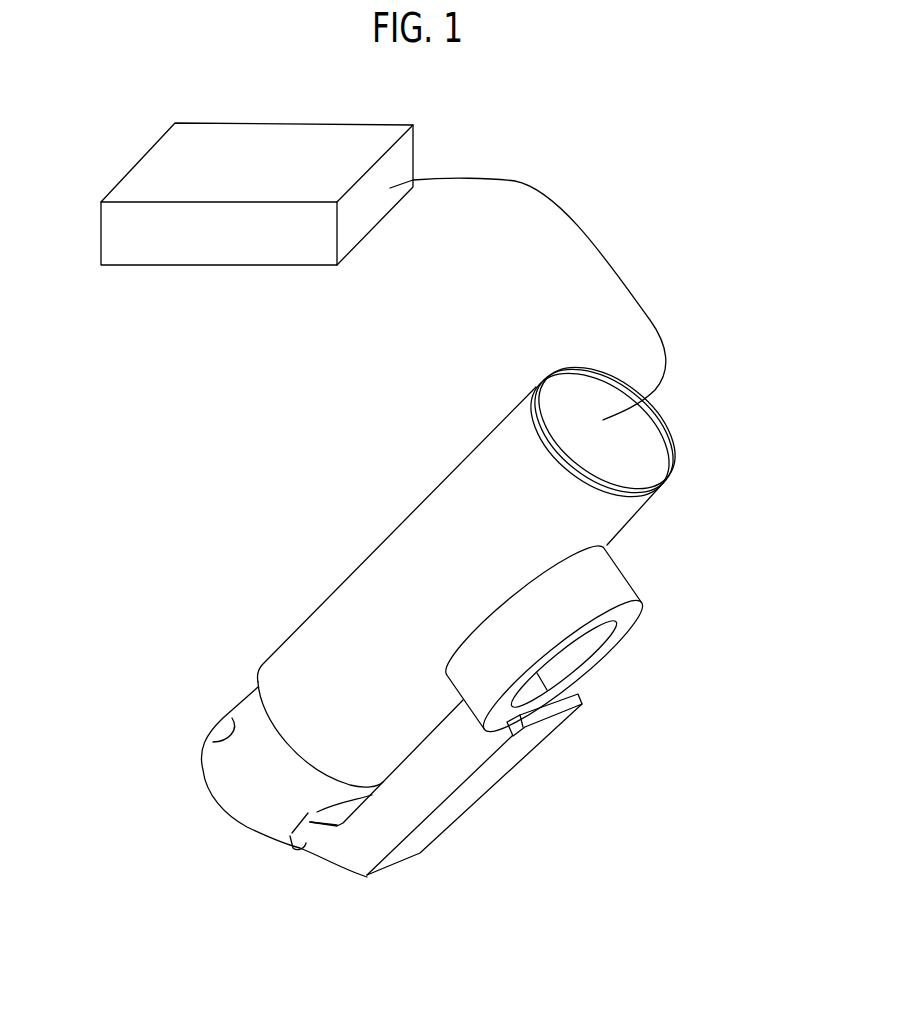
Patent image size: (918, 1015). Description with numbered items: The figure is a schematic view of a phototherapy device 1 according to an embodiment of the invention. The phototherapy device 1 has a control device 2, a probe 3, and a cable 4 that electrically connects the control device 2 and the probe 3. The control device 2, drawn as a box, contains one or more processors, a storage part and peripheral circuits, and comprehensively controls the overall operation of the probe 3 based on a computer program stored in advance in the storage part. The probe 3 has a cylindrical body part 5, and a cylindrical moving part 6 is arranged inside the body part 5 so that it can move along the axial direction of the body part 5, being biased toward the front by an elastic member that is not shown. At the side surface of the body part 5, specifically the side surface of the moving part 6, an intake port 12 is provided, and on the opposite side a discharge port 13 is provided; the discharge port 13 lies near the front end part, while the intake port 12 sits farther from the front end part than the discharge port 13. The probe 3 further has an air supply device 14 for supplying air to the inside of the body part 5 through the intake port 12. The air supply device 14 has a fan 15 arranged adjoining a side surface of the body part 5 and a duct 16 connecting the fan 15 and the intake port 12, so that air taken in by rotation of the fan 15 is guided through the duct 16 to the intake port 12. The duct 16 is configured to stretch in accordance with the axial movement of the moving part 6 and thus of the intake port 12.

The phototherapy device 1 is at (240, 392).
The control device 2 is at (168, 162).
The probe 3 is at (632, 793).
The cable 4 is at (587, 245).
The body part 5 is at (440, 507).
The moving part 6 is at (247, 712).
The intake port 12 is at (305, 813).
The discharge port 13 is at (214, 717).
The air supply device 14 is at (570, 728).
The fan 15 is at (628, 615).
The duct 16 is at (422, 793).